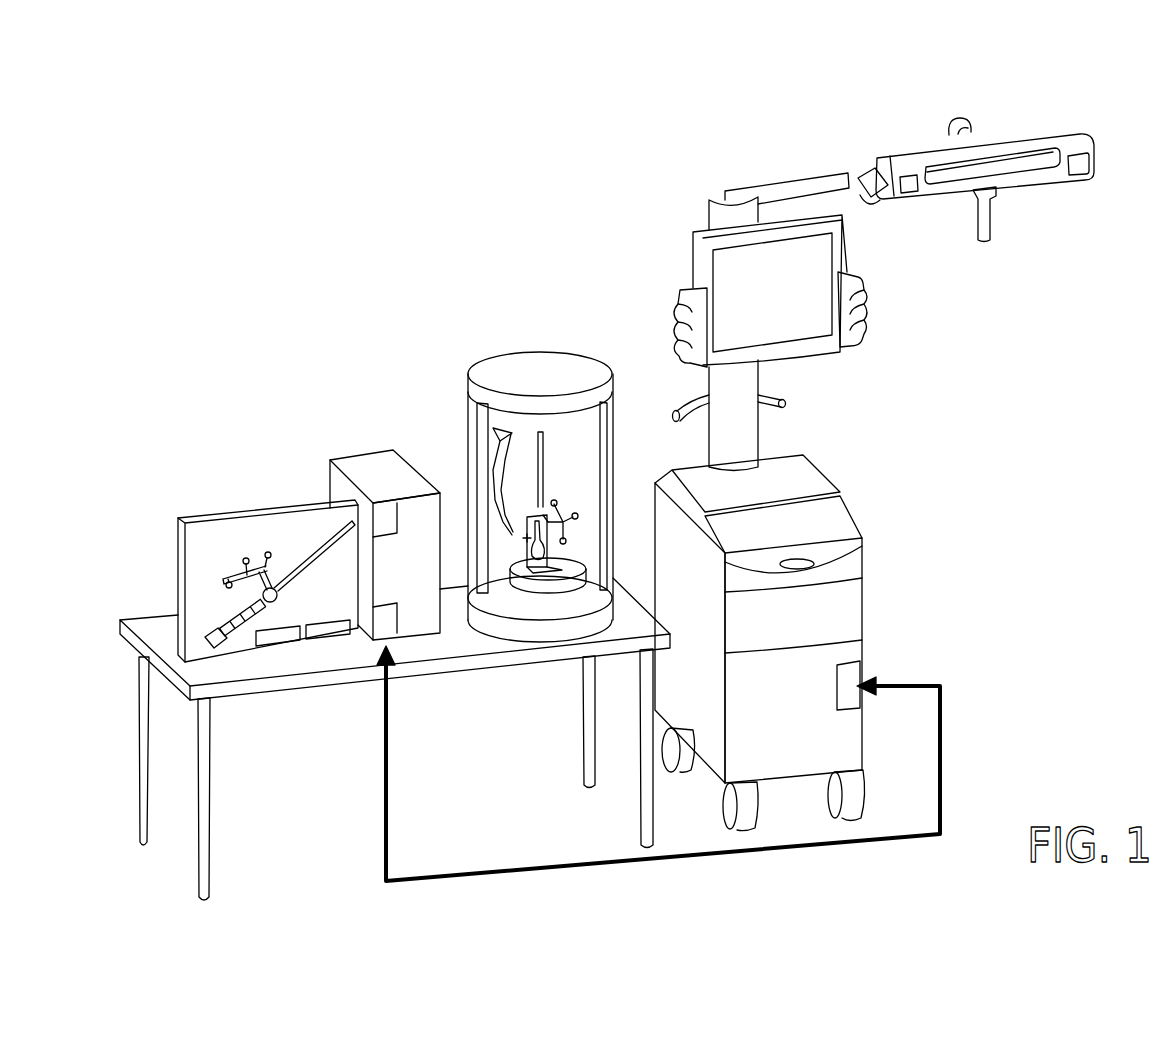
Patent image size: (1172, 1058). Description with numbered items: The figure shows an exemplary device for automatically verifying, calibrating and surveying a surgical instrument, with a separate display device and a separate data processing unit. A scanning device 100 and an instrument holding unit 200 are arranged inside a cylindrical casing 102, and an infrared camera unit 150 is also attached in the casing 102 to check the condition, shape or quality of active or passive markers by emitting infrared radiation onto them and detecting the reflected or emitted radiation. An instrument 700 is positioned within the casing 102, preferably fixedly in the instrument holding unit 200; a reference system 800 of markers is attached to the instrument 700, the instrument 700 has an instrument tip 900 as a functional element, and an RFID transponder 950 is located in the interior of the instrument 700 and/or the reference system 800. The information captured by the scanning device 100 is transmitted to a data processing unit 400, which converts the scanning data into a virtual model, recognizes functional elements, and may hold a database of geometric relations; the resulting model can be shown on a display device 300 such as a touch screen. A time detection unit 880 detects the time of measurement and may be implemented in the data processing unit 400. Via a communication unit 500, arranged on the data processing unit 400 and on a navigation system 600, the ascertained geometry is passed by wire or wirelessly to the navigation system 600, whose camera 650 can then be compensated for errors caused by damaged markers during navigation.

The scanning device 100 is at (503, 437).
The cylindrical casing 102 is at (548, 352).
The infrared camera unit 150 is at (501, 500).
The instrument holding unit 200 is at (541, 576).
The display device 300 is at (283, 533).
The data processing unit 400 is at (373, 567).
The communication unit 500 is at (397, 623).
The navigation system 600 is at (916, 499).
The camera 650 is at (1073, 137).
The instrument 700 is at (525, 514).
The reference system 800 is at (573, 499).
The time detection unit 880 is at (330, 492).
The instrument tip 900 is at (540, 432).
The RFID transponder 950 is at (527, 540).